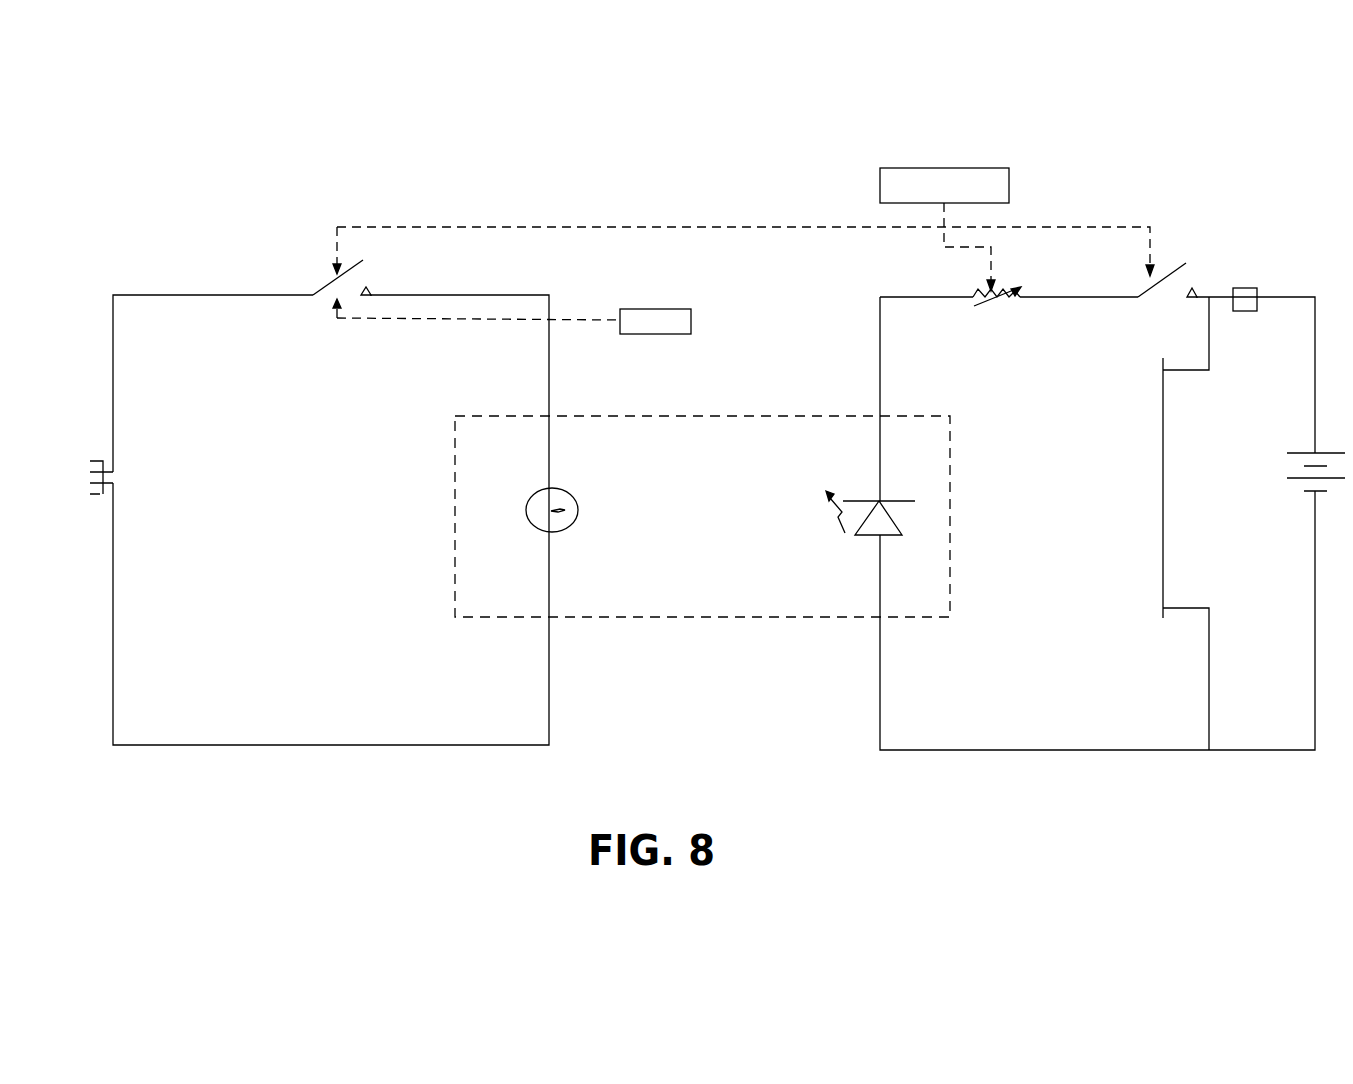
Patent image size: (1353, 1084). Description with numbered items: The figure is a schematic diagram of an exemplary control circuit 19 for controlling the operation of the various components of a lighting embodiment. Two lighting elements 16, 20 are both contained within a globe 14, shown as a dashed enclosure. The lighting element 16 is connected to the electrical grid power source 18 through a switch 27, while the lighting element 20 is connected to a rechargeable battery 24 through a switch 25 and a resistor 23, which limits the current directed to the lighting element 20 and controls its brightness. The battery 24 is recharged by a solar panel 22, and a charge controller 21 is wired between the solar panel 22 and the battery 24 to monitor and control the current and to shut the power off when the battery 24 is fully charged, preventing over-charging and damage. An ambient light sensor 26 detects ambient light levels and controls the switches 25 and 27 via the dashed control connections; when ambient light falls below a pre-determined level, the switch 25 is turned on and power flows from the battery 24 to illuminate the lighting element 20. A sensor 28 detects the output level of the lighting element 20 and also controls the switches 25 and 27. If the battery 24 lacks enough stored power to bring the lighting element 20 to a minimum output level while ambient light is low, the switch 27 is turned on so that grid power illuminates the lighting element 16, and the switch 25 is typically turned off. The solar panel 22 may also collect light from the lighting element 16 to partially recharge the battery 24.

The globe 14 is at (702, 618).
The lighting element 16 is at (572, 522).
The electrical grid power source 18 is at (103, 494).
The control circuit 19 is at (467, 172).
The lighting element 20 is at (890, 498).
The charge controller 21 is at (1243, 288).
The solar panel 22 is at (1163, 548).
The resistor 23 is at (995, 300).
The battery 24 is at (1287, 478).
The switch 25 is at (1165, 267).
The ambient light sensor 26 is at (880, 193).
The switch 27 is at (330, 264).
The sensor 28 is at (691, 313).